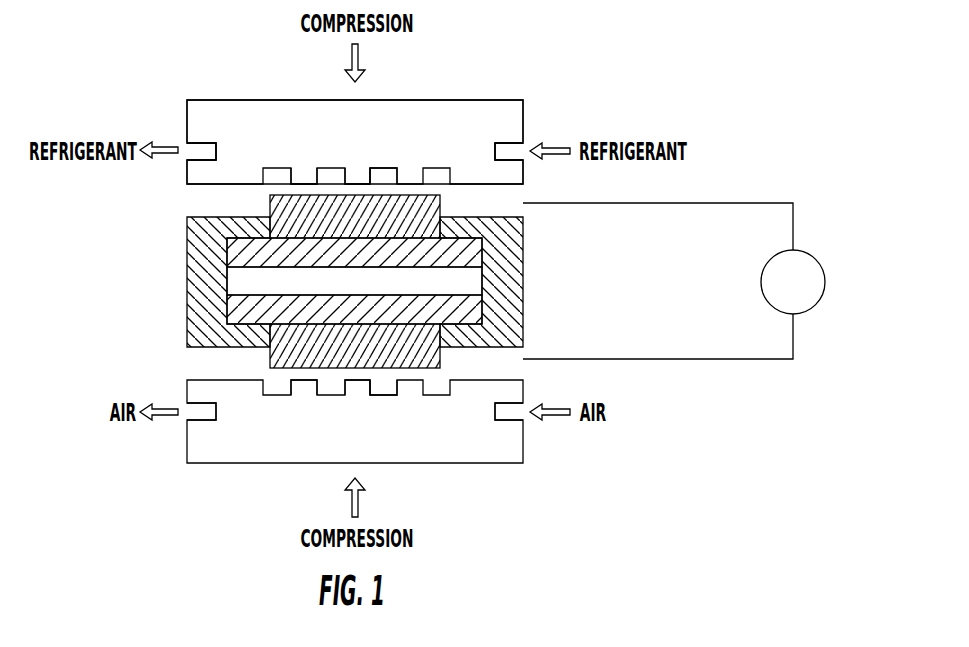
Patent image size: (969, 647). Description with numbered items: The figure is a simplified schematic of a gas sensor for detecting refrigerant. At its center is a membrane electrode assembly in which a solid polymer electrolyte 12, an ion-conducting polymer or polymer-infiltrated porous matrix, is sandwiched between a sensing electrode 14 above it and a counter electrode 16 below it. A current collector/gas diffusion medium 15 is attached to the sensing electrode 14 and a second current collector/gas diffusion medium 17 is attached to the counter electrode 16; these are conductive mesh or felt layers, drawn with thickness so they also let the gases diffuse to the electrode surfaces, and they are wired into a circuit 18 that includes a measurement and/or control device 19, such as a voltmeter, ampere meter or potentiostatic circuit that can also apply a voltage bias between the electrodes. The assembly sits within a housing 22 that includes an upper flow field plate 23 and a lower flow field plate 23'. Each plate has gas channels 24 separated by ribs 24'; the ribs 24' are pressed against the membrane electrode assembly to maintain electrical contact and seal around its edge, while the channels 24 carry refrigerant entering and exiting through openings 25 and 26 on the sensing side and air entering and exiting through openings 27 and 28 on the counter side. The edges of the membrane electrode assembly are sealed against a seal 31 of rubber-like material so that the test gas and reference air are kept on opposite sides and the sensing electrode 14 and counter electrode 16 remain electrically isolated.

The solid polymer electrolyte 12 is at (473, 282).
The sensing electrode 14 is at (470, 253).
The current collector/gas diffusion medium 15 is at (272, 200).
The counter electrode 16 is at (470, 312).
The current collector/gas diffusion medium 17 is at (280, 358).
The circuit 18 is at (743, 203).
The measurement and/or control device 19 is at (823, 292).
The housing 22 is at (192, 100).
The flow field plate 23 is at (355, 116).
The flow field plate 23' is at (355, 442).
The gas channel 24 is at (391, 276).
The rib 24' is at (324, 276).
The opening 25 is at (523, 152).
The opening 26 is at (187, 150).
The opening 27 is at (522, 412).
The opening 28 is at (190, 413).
The seal 31 is at (203, 229).